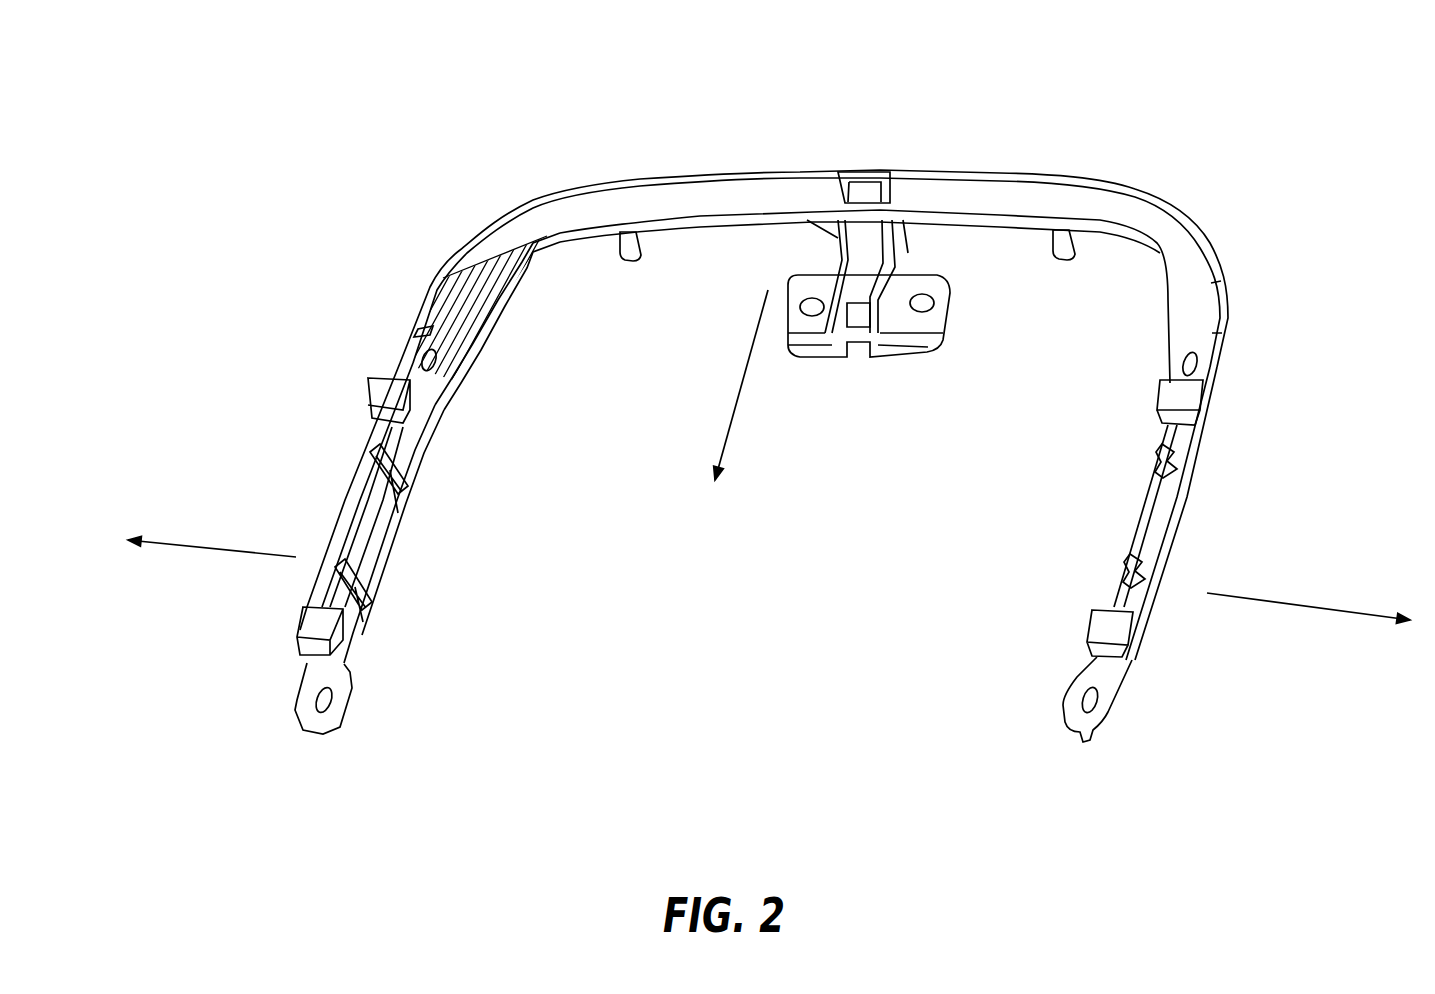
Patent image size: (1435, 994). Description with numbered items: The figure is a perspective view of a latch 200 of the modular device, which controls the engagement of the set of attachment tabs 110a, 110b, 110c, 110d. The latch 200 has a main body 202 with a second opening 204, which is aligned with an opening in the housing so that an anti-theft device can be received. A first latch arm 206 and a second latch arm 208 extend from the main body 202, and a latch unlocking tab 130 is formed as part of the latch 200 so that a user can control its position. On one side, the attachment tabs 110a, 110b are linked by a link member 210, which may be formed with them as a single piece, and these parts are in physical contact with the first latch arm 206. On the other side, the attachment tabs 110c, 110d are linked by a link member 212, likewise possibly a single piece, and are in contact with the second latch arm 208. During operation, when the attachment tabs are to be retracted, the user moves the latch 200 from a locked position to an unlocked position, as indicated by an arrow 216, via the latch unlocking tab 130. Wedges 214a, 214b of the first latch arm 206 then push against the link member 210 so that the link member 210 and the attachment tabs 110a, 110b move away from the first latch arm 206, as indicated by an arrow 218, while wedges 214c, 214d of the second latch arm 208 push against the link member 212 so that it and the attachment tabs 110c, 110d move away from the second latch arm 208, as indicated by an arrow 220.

The latch 200 is at (919, 36).
The main body 202 is at (1033, 172).
The second opening 204 is at (866, 180).
The latch unlocking tab 130 is at (903, 358).
The first latch arm 206 is at (437, 440).
The second latch arm 208 is at (1200, 490).
The link member 210 is at (340, 510).
The link member 212 is at (1158, 512).
The attachment tab 110a is at (390, 402).
The attachment tab 110b is at (320, 625).
The attachment tab 110c is at (1172, 395).
The attachment tab 110d is at (1107, 623).
The wedge 214a is at (413, 505).
The wedge 214b is at (380, 612).
The wedge 214c is at (1150, 458).
The wedge 214d is at (1122, 563).
The arrow 216 is at (745, 372).
The arrow 218 is at (178, 548).
The arrow 220 is at (1280, 607).